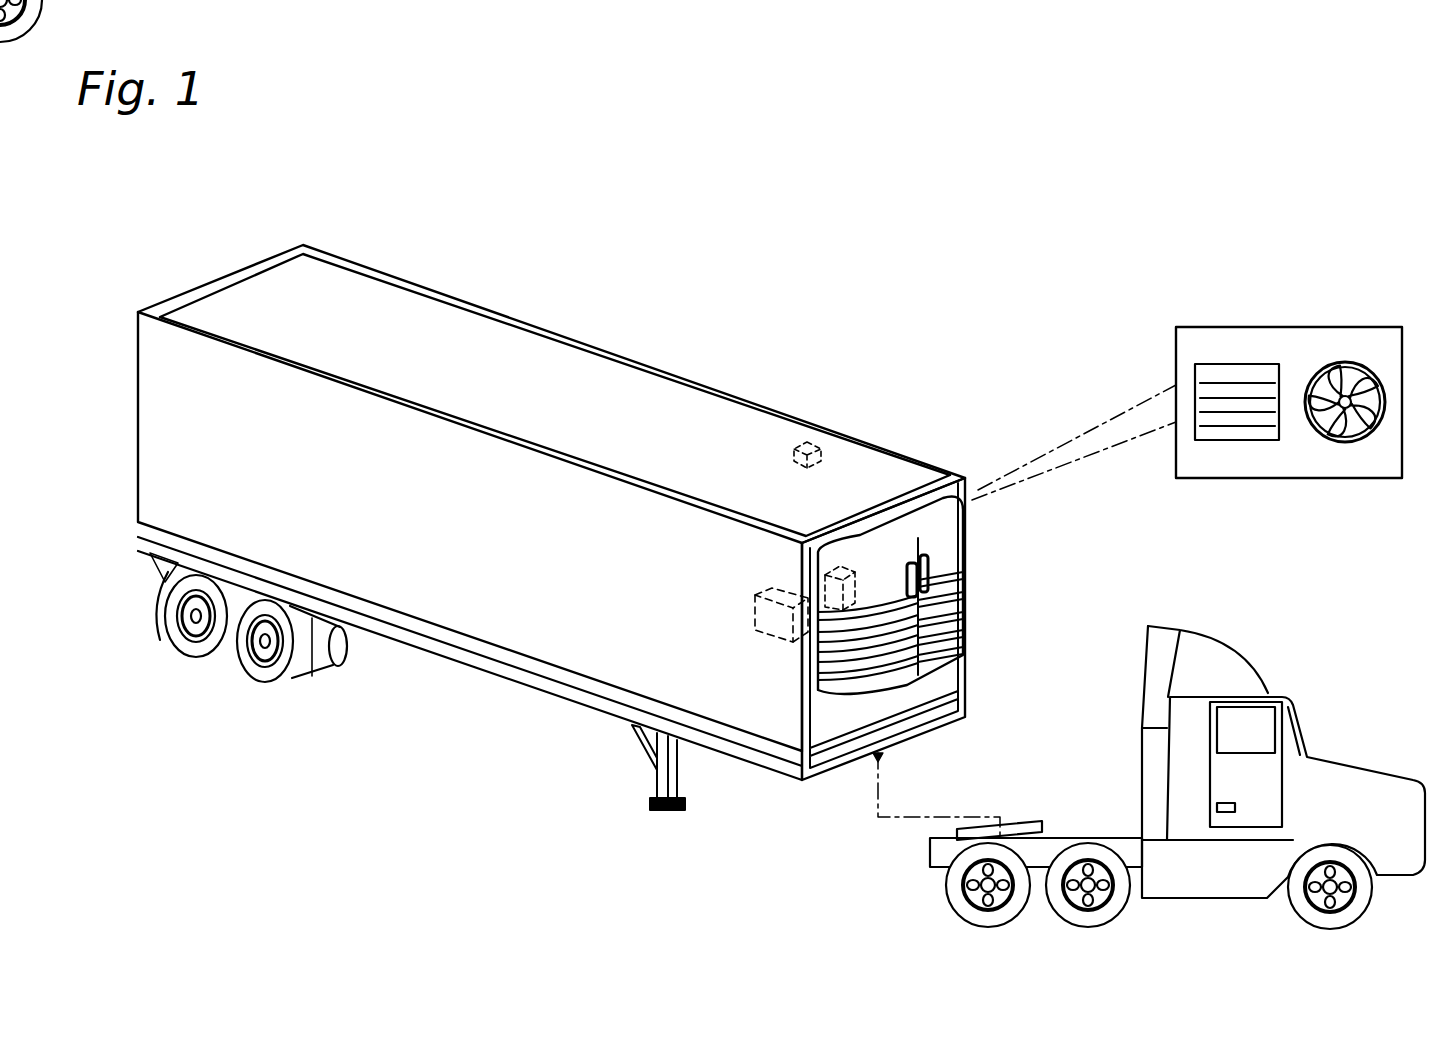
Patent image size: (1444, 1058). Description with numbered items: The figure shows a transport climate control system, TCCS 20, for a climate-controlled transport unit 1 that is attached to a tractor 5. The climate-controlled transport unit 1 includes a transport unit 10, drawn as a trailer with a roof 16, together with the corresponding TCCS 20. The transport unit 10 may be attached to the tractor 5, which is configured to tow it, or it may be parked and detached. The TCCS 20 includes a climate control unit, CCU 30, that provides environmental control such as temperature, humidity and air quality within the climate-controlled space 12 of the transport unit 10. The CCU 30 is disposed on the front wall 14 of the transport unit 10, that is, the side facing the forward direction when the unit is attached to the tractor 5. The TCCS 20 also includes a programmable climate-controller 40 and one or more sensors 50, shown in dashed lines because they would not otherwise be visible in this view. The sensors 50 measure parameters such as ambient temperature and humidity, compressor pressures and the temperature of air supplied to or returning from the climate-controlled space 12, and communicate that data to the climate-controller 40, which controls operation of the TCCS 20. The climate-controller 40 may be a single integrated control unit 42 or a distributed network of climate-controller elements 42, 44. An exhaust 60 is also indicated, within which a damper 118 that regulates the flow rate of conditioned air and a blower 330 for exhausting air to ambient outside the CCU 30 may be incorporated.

The climate-controlled transport unit 1 is at (600, 285).
The tractor 5 is at (1262, 627).
The transport unit 10 is at (594, 526).
The climate-controlled space 12 is at (552, 603).
The front wall 14 is at (945, 683).
The roof 16 is at (360, 293).
The transport climate control system (TCCS) 20 is at (983, 463).
The climate control unit (CCU) 30 is at (958, 547).
The programmable climate-controller 40 is at (766, 738).
The climate-controller element 42 is at (777, 640).
The climate-controller element 44 is at (845, 612).
The sensor 50 is at (820, 432).
The exhaust 60 is at (1248, 379).
The damper 118 is at (1252, 364).
The blower 330 is at (1333, 367).